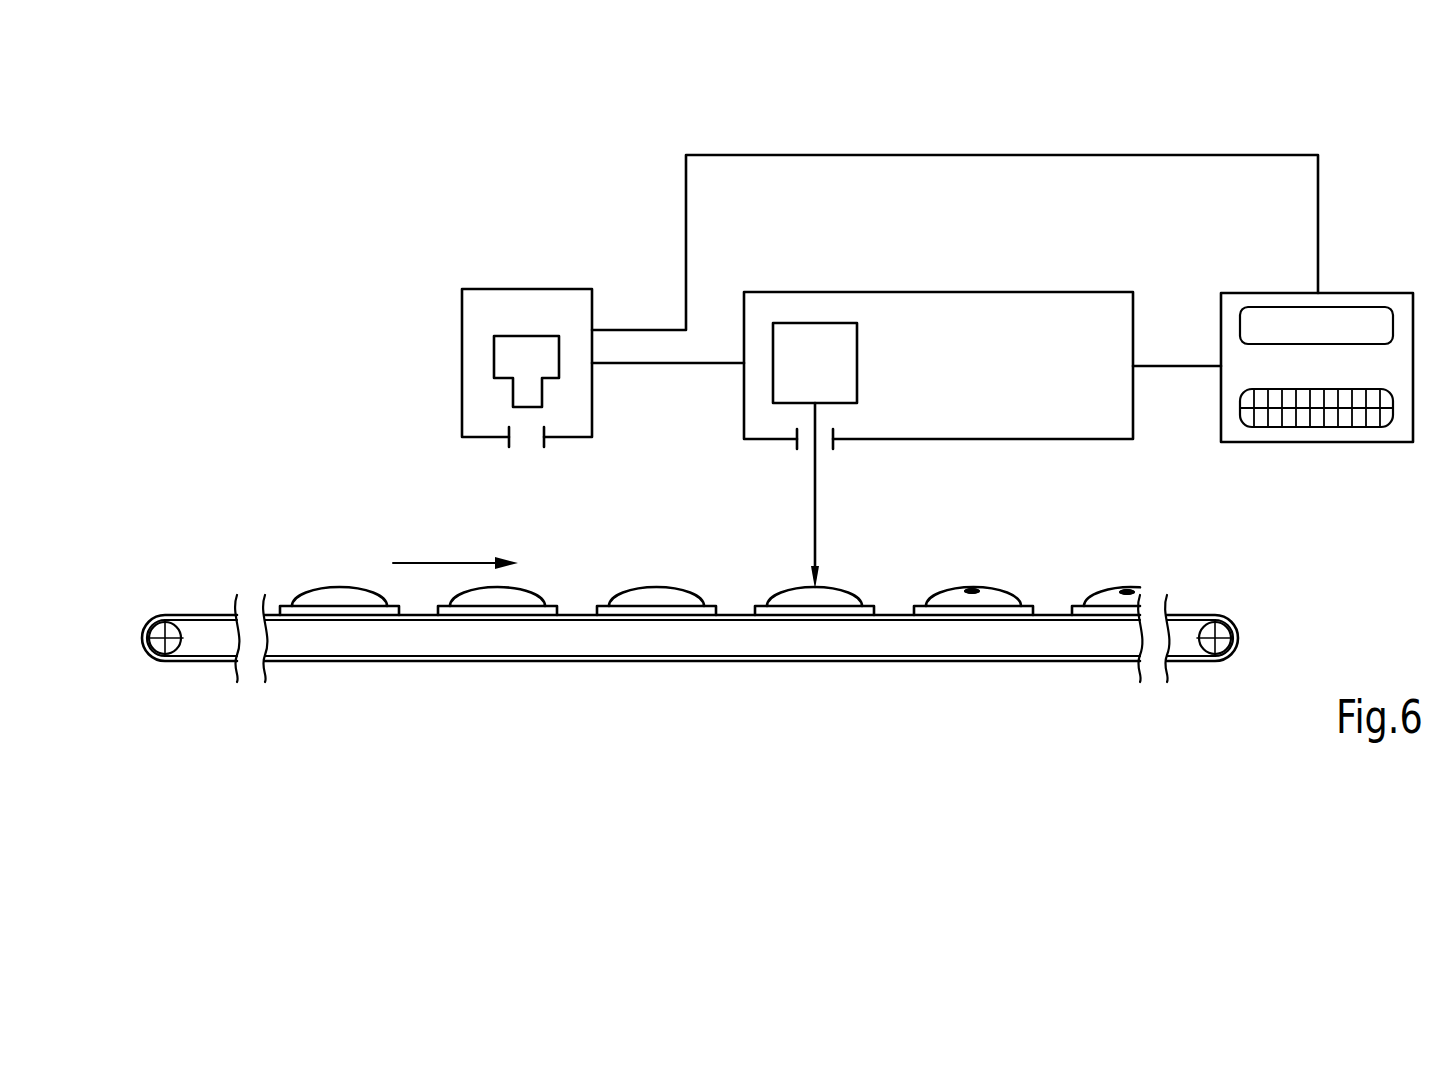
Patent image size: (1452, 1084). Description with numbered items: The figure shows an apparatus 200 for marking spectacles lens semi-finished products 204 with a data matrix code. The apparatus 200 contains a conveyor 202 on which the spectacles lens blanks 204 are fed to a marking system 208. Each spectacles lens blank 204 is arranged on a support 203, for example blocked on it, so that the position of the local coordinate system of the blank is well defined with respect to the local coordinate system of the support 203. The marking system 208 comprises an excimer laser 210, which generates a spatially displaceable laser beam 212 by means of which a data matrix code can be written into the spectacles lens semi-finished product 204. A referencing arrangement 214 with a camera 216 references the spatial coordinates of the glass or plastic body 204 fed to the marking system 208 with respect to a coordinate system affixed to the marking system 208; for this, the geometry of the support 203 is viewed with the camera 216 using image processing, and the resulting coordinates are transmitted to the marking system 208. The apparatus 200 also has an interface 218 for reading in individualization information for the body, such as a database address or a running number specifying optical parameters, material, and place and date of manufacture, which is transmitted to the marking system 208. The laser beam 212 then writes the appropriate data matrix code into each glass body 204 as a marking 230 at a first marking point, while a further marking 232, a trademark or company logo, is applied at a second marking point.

The apparatus 200 is at (292, 214).
The conveyor 202 is at (680, 663).
The support 203 is at (294, 606).
The spectacles lens semi-finished product 204 is at (341, 590).
The marking system 208 is at (961, 292).
The excimer laser 210 is at (814, 323).
The laser beam 212 is at (817, 497).
The referencing arrangement 214 is at (500, 289).
The camera 216 is at (541, 336).
The interface 218 is at (1384, 293).
The marking 230 is at (970, 590).
The further marking 232 is at (1049, 591).